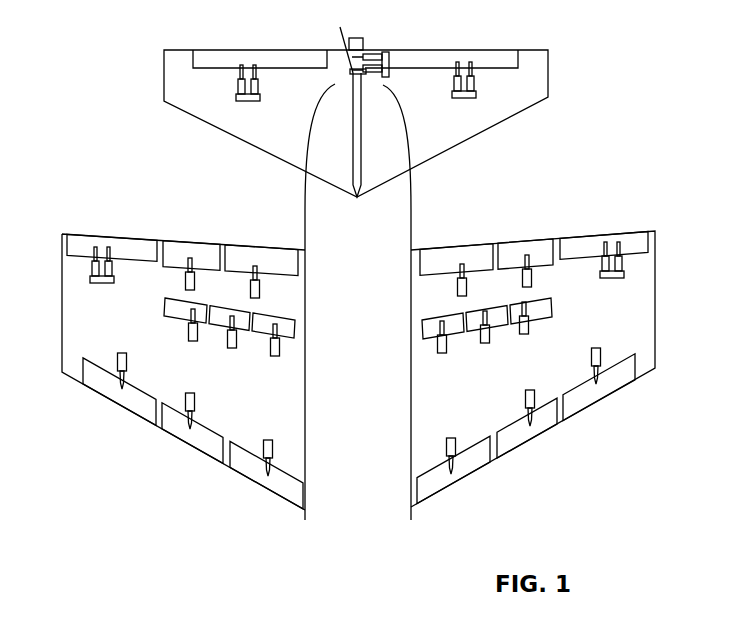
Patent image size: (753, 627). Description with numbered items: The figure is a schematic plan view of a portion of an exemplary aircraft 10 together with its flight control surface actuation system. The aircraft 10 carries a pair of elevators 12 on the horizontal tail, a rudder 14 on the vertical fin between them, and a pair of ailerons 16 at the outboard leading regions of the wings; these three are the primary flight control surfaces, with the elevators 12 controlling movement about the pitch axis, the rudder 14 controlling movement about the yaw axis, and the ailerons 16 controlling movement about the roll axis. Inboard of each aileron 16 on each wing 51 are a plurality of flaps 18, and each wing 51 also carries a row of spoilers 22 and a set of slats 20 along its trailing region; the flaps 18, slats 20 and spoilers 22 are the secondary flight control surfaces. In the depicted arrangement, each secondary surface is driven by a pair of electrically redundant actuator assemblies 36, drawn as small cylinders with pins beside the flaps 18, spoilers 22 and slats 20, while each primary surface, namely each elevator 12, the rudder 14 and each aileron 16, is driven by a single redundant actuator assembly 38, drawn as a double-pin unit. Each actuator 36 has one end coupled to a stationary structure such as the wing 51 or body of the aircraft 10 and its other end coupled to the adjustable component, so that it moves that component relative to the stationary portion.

The aircraft 10 is at (96, 150).
The elevator 12 is at (222, 55).
The rudder 14 is at (352, 38).
The aileron 16 is at (132, 243).
The flap 18 is at (182, 247).
The slat 20 is at (131, 407).
The spoiler 22 is at (285, 322).
The electrically redundant actuator assembly 36 is at (618, 343).
The redundant actuator assembly 38 is at (388, 72).
The wing 51 is at (82, 313).